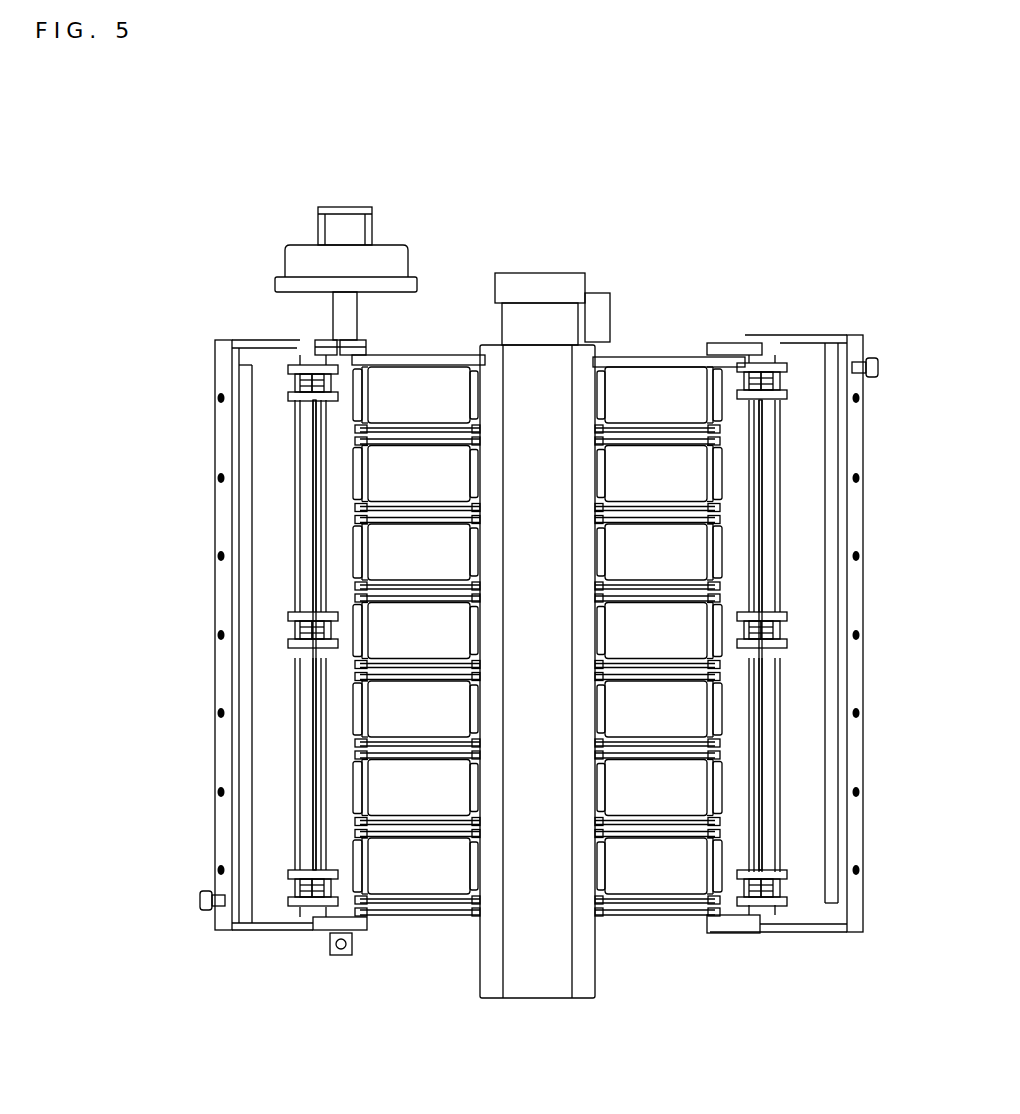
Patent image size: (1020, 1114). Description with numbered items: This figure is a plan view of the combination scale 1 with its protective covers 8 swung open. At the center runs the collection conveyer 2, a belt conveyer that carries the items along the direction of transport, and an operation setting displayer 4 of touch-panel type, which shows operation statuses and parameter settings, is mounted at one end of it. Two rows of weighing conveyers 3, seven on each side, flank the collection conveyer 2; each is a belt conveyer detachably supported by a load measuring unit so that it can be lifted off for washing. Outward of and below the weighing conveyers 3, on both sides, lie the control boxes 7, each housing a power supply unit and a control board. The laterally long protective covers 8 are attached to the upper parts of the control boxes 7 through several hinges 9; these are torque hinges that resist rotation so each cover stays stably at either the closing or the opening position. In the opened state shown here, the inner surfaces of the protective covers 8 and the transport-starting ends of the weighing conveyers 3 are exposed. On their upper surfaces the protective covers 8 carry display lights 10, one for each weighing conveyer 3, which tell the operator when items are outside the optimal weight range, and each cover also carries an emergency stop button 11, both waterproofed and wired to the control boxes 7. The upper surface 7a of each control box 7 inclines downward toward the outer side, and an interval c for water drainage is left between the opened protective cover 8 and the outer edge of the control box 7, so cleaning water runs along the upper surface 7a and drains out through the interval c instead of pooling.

The combination scale 1 is at (688, 300).
The collection conveyer 2 is at (540, 997).
The weighing conveyer 3 is at (412, 388).
The operation setting displayer 4 is at (295, 292).
The control box 7 is at (303, 776).
The upper surface 7a is at (338, 752).
The protective cover 8 is at (212, 601).
The hinge 9 is at (783, 364).
The display light 10 is at (218, 400).
The emergency stop button 11 is at (199, 899).
The interval c is at (305, 517).